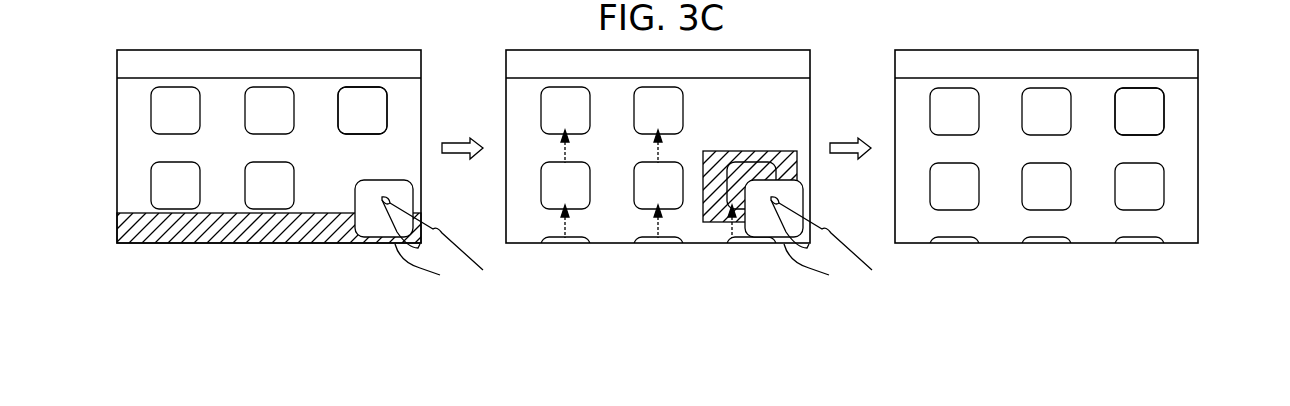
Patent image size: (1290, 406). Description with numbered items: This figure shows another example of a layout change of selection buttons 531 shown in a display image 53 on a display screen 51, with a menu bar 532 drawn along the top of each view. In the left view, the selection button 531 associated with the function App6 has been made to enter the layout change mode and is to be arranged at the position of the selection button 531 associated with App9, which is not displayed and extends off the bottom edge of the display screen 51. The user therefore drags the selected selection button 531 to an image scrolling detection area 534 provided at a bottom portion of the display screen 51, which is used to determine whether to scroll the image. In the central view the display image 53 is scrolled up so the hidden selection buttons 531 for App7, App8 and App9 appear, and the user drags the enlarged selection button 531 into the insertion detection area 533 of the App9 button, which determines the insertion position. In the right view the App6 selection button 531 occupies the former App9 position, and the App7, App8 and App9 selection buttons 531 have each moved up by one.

The display screen 51 is at (317, 44).
The display image 53 is at (117, 193).
The selection button 531 is at (387, 104).
The menu bar 532 is at (403, 63).
The insertion detection area 533 is at (797, 174).
The image scrolling detection area 534 is at (117, 228).